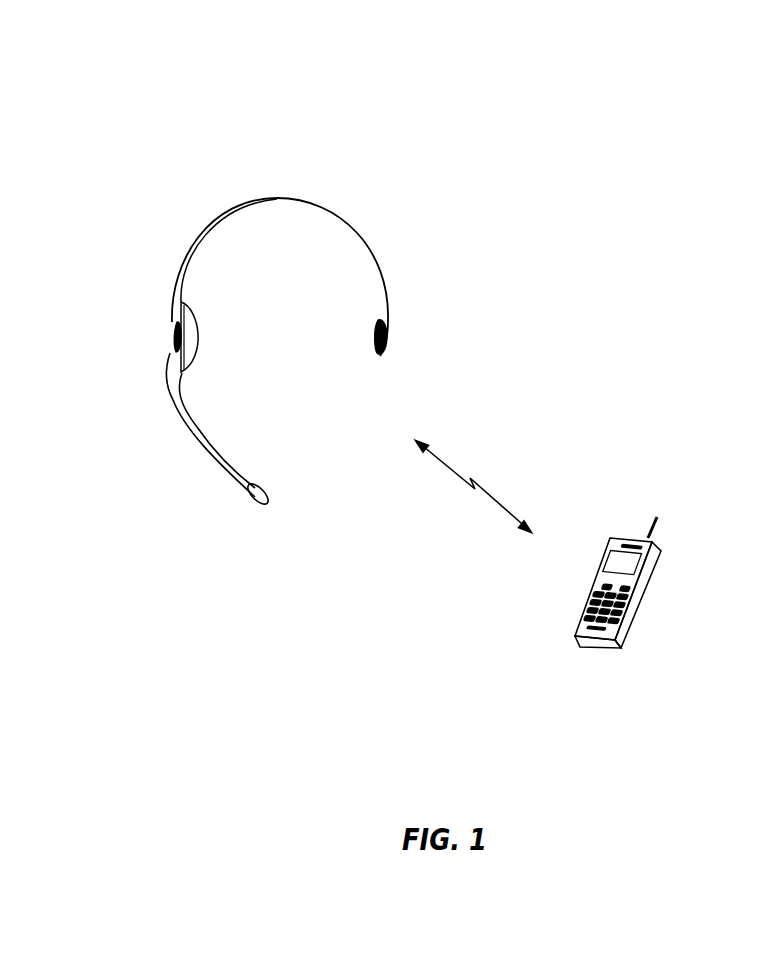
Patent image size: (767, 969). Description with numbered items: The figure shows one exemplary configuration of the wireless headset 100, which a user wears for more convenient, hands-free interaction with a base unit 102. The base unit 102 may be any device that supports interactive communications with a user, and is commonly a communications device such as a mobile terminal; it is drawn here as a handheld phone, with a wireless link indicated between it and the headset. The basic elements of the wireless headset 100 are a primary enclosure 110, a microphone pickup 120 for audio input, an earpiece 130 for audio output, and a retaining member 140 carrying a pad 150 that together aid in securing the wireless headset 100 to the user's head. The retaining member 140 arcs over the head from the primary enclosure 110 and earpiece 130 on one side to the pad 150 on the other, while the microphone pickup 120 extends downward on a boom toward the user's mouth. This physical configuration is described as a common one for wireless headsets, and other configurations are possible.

The wireless headset 100 is at (455, 115).
The base unit 102 is at (643, 607).
The primary enclosure 110 is at (172, 293).
The microphone pickup 120 is at (262, 492).
The earpiece 130 is at (197, 332).
The retaining member 140 is at (358, 233).
The pad 150 is at (380, 356).